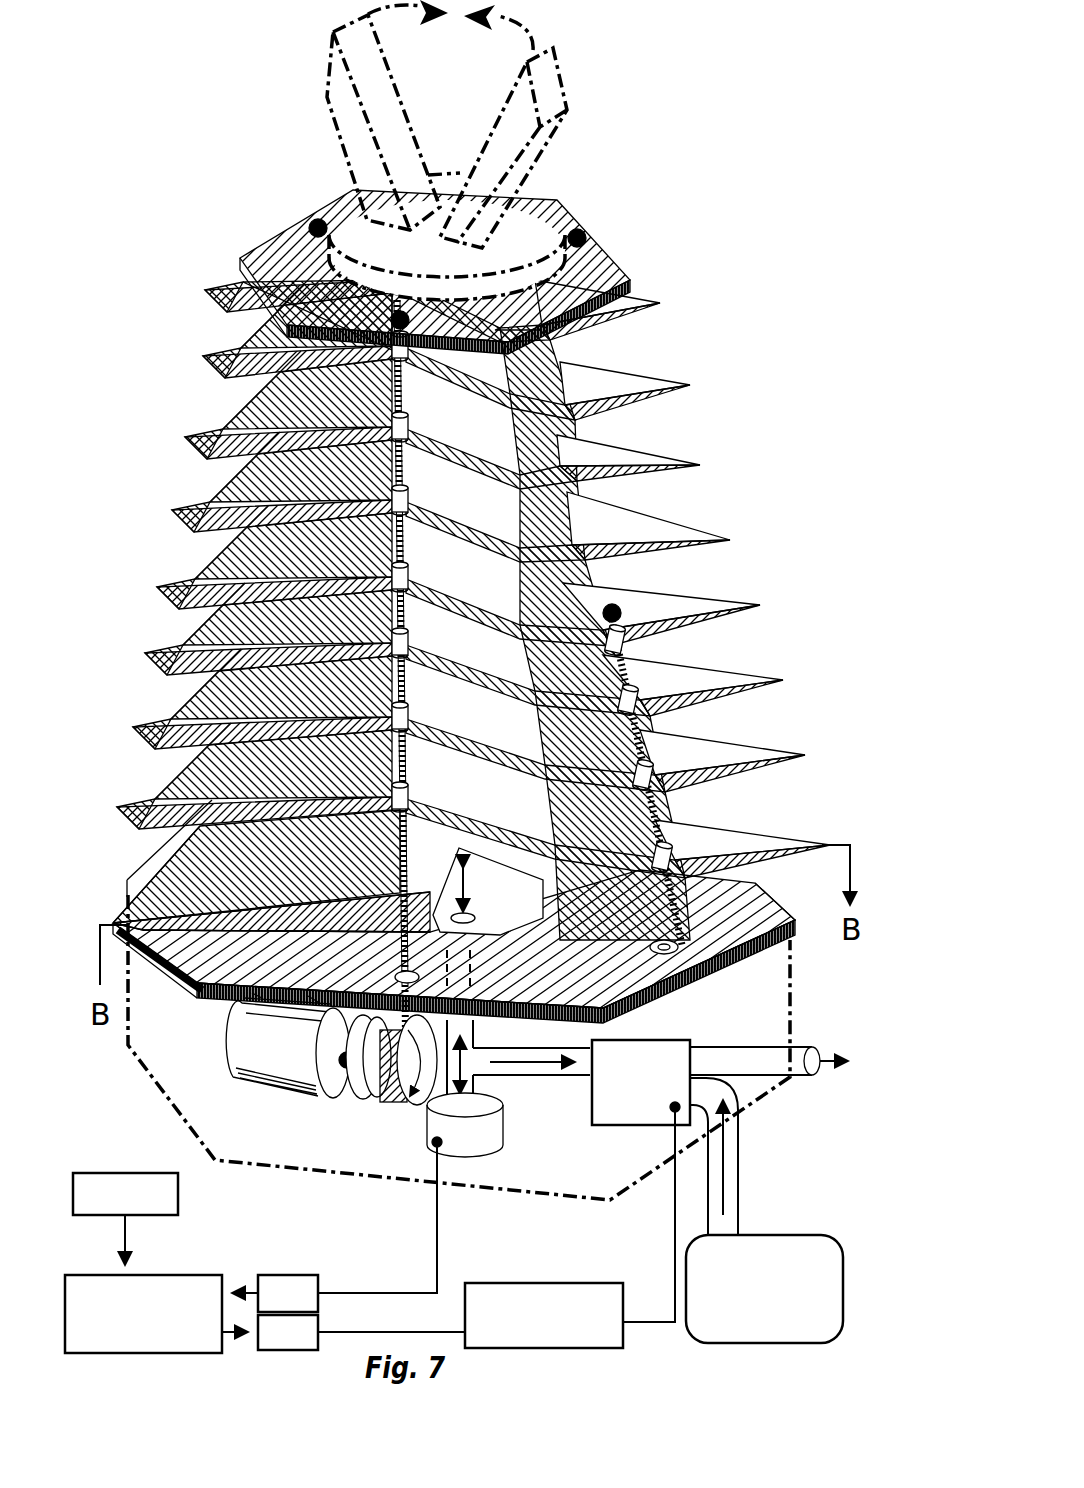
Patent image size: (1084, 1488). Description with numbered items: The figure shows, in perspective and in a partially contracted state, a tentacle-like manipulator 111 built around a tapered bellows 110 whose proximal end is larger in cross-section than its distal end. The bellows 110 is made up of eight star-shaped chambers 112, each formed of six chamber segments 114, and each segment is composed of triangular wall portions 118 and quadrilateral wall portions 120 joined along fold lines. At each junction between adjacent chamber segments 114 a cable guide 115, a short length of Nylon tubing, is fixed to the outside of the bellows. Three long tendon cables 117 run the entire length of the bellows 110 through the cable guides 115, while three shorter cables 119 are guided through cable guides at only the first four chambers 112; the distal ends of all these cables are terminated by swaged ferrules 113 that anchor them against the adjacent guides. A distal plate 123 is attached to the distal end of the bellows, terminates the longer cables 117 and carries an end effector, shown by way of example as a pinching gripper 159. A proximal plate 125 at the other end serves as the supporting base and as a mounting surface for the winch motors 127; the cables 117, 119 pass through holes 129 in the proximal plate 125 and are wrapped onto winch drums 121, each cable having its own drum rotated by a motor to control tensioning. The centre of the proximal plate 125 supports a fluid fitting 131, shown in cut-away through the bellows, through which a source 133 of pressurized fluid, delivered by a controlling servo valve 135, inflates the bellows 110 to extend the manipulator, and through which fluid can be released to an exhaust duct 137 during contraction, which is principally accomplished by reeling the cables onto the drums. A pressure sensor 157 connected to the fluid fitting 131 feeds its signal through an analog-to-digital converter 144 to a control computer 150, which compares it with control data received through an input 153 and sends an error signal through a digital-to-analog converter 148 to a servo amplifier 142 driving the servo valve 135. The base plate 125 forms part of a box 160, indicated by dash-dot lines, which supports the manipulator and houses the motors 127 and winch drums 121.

The tapered bellows 110 is at (665, 522).
The tentacle-like manipulator 111 is at (451, 642).
The star-shaped chamber 112 is at (608, 378).
The swaged ferrule 113 is at (318, 226).
The chamber segment 114 is at (160, 758).
The cable guide 115 is at (448, 680).
The cable 117 is at (410, 417).
The triangular wall portion 118 is at (628, 318).
The cable 119 is at (658, 799).
The quadrilateral wall portion 120 is at (660, 418).
The winch drum 121 is at (390, 1108).
The distal plate 123 is at (270, 246).
The proximal plate 125 is at (454, 946).
The winch motor 127 is at (255, 1042).
The hole 129 is at (660, 955).
The fluid fitting 131 is at (475, 918).
The source of pressurized fluid 133 is at (764, 1210).
The controlling valve 135 is at (641, 1082).
The exhaust duct 137 is at (785, 1055).
The servo amplifier 142 is at (595, 1264).
The analog-to-digital converter 144 is at (336, 1264).
The digital-to-analog converter 148 is at (335, 1322).
The control computer 150 is at (218, 1275).
The input 153 is at (175, 1173).
The pressure sensor 157 is at (520, 1152).
The pinching gripper 159 is at (505, 95).
The box 160 is at (330, 1178).